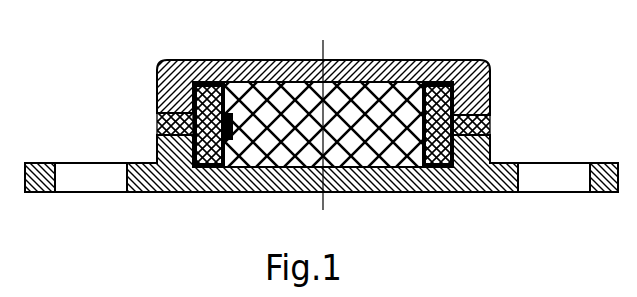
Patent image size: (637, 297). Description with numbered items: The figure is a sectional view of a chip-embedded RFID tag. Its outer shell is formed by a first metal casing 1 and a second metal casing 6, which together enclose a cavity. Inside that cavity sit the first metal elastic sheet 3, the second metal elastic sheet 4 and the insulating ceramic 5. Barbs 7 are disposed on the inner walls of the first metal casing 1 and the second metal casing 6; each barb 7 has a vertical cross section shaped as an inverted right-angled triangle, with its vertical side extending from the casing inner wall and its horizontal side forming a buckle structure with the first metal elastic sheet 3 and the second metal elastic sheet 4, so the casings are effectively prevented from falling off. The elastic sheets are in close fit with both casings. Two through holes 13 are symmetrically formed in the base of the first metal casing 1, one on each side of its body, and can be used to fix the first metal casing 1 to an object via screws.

The first metal casing 1 is at (411, 180).
The first metal elastic sheet 3 is at (491, 63).
The second metal elastic sheet 4 is at (222, 193).
The insulating ceramic 5 is at (240, 66).
The second metal casing 6 is at (372, 62).
The barb 7 is at (156, 122).
The through hole 13 is at (86, 182).